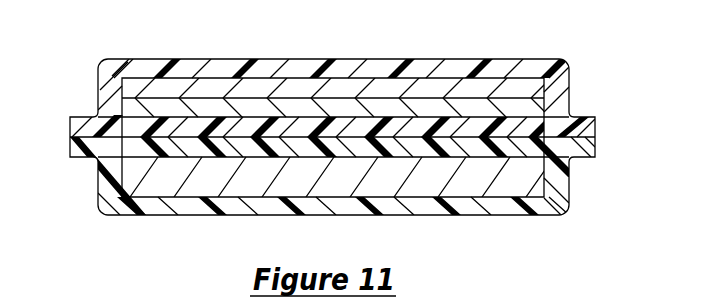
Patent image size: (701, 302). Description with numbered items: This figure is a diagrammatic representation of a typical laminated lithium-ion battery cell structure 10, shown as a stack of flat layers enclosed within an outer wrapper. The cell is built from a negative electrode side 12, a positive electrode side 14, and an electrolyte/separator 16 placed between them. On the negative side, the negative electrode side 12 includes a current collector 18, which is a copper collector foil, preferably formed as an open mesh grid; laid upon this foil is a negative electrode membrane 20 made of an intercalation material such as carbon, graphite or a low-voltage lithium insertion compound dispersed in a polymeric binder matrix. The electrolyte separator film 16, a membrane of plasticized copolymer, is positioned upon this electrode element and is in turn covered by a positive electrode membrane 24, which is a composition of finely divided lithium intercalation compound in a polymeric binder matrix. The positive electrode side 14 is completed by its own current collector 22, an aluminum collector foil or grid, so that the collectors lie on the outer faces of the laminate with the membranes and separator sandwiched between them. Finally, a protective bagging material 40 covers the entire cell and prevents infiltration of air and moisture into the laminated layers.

The laminated battery cell structure 10 is at (604, 52).
The negative electrode side 12 is at (204, 78).
The positive electrode side 14 is at (227, 201).
The electrolyte/separator 16 is at (503, 125).
The current collector 18 is at (298, 90).
The negative electrode membrane 20 is at (97, 100).
The current collector 22 is at (151, 186).
The positive electrode membrane 24 is at (510, 147).
The protective bagging material 40 is at (427, 207).